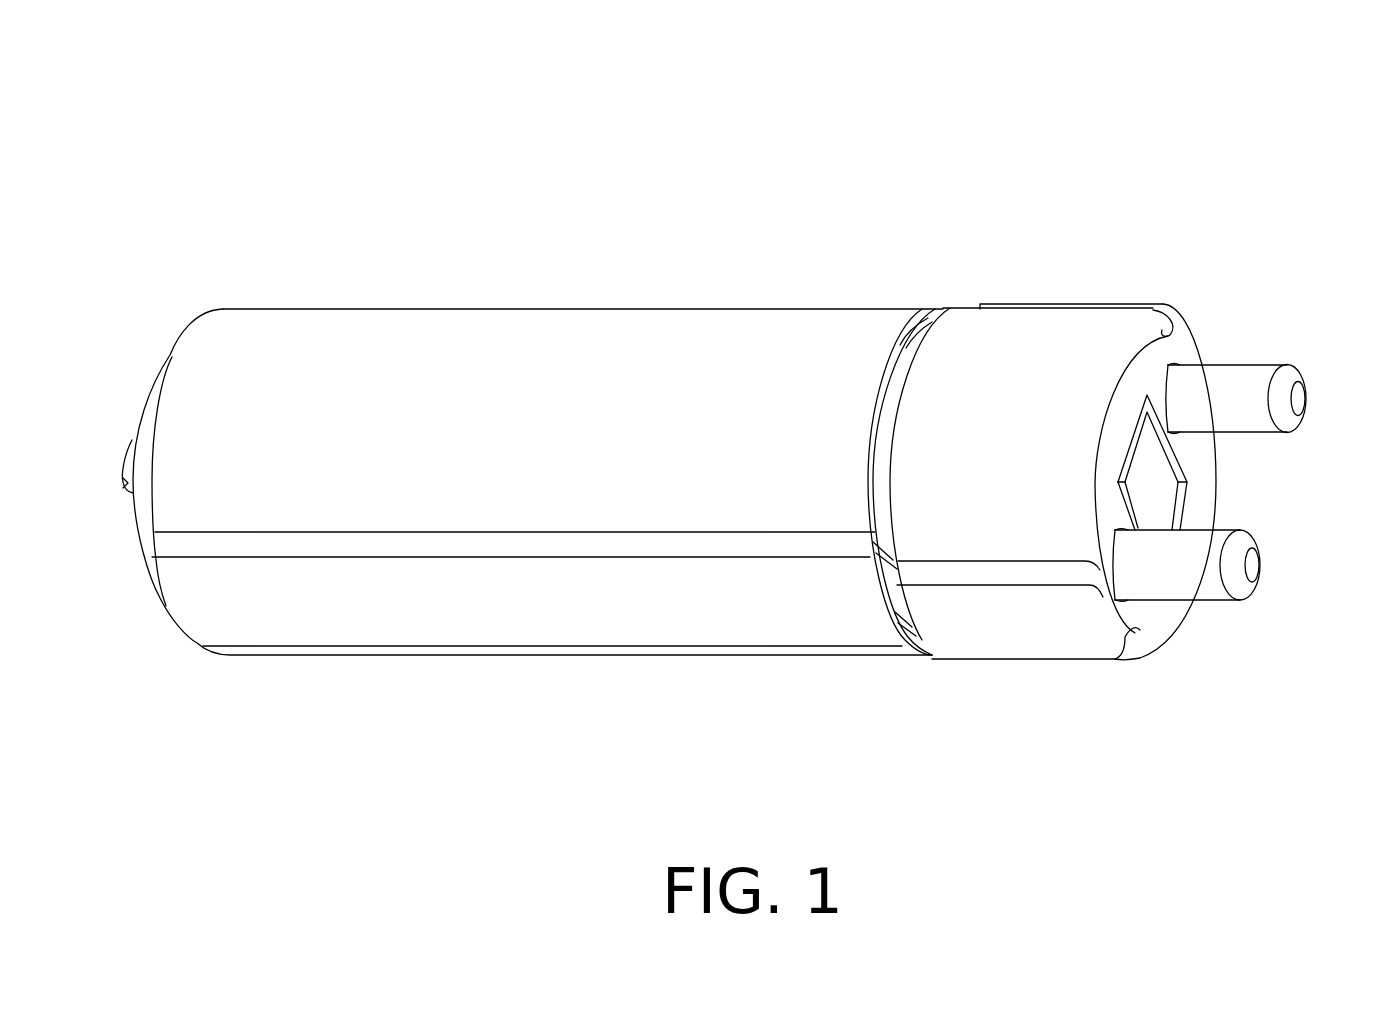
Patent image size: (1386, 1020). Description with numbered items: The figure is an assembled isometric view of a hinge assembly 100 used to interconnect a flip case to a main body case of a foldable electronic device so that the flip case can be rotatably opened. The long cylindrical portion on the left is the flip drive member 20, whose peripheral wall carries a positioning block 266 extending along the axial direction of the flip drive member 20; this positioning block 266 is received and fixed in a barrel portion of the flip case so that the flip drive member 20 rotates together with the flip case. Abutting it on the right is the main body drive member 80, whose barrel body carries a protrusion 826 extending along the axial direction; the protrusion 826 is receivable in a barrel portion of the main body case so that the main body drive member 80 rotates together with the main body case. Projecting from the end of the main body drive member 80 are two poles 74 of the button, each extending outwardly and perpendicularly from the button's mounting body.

The hinge assembly 100 is at (757, 59).
The flip drive member 20 is at (472, 353).
The positioning block 266 is at (405, 603).
The main body drive member 80 is at (1003, 355).
The protrusion 826 is at (1012, 623).
The pole 74 is at (1230, 380).